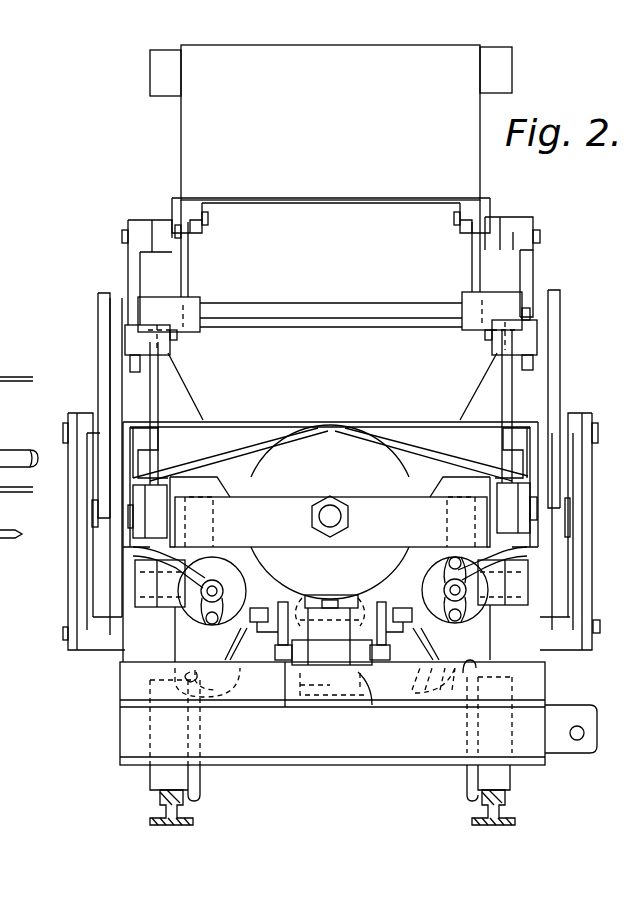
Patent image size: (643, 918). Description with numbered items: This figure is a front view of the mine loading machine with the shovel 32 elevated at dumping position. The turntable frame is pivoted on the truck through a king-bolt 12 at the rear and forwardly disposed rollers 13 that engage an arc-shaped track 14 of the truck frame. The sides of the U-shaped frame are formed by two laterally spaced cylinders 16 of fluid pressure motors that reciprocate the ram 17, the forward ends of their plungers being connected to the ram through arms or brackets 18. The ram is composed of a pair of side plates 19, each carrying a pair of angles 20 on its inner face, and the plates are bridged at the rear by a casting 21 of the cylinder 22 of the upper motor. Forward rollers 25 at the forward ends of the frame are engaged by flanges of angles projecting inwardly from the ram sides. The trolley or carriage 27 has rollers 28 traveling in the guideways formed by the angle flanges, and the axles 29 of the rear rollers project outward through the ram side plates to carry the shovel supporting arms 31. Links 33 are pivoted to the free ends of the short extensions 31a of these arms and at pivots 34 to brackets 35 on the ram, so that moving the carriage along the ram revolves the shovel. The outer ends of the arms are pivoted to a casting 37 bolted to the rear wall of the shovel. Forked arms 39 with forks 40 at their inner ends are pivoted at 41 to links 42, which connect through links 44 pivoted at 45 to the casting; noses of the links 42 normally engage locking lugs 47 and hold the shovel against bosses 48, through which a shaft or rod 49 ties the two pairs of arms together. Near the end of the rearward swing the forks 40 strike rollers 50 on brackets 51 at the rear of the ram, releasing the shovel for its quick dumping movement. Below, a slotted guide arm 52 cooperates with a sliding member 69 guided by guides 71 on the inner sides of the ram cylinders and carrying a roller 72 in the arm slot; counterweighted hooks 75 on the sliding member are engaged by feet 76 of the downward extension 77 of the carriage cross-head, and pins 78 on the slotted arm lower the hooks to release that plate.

The king-bolt 12 is at (330, 601).
The rollers 13 is at (236, 684).
The arc-shaped track 14 is at (547, 698).
The cylinders 16 is at (222, 592).
The ram 17 is at (138, 456).
The arms or brackets 18 is at (185, 552).
The side plates 19 is at (540, 529).
The angles 20 is at (148, 482).
The casting 21 is at (236, 472).
The cylinder 22 is at (330, 512).
The forward rollers 25 is at (156, 610).
The trolley or carriage 27 is at (352, 520).
The rollers 28 is at (150, 512).
The axles 29 is at (570, 508).
The shovel supporting arms 31 is at (556, 462).
The short arms or extensions 31a is at (103, 468).
The shovel 32 is at (315, 171).
The links 33 is at (30, 449).
The pivot 34 is at (63, 640).
The brackets 35 is at (66, 632).
The casting 37 is at (190, 266).
The forked arms 39 is at (126, 265).
The forks 40 is at (130, 363).
The pivot 41 is at (122, 240).
The links 42 is at (160, 218).
The links 44 is at (178, 206).
The pivot 45 is at (210, 220).
The locking lug 47 is at (498, 92).
The bosses 48 is at (158, 297).
The shaft or rod 49 is at (326, 308).
The rollers 50 is at (160, 338).
The brackets 51 is at (478, 372).
The slotted guide arm 52 is at (362, 653).
The sliding member 69 is at (272, 628).
The guides 71 is at (402, 608).
The roller 72 is at (370, 700).
The counterweighted hooks 75 is at (284, 602).
The lugs or feet 76 is at (320, 598).
The downward extension 77 is at (378, 600).
The pins 78 is at (283, 708).